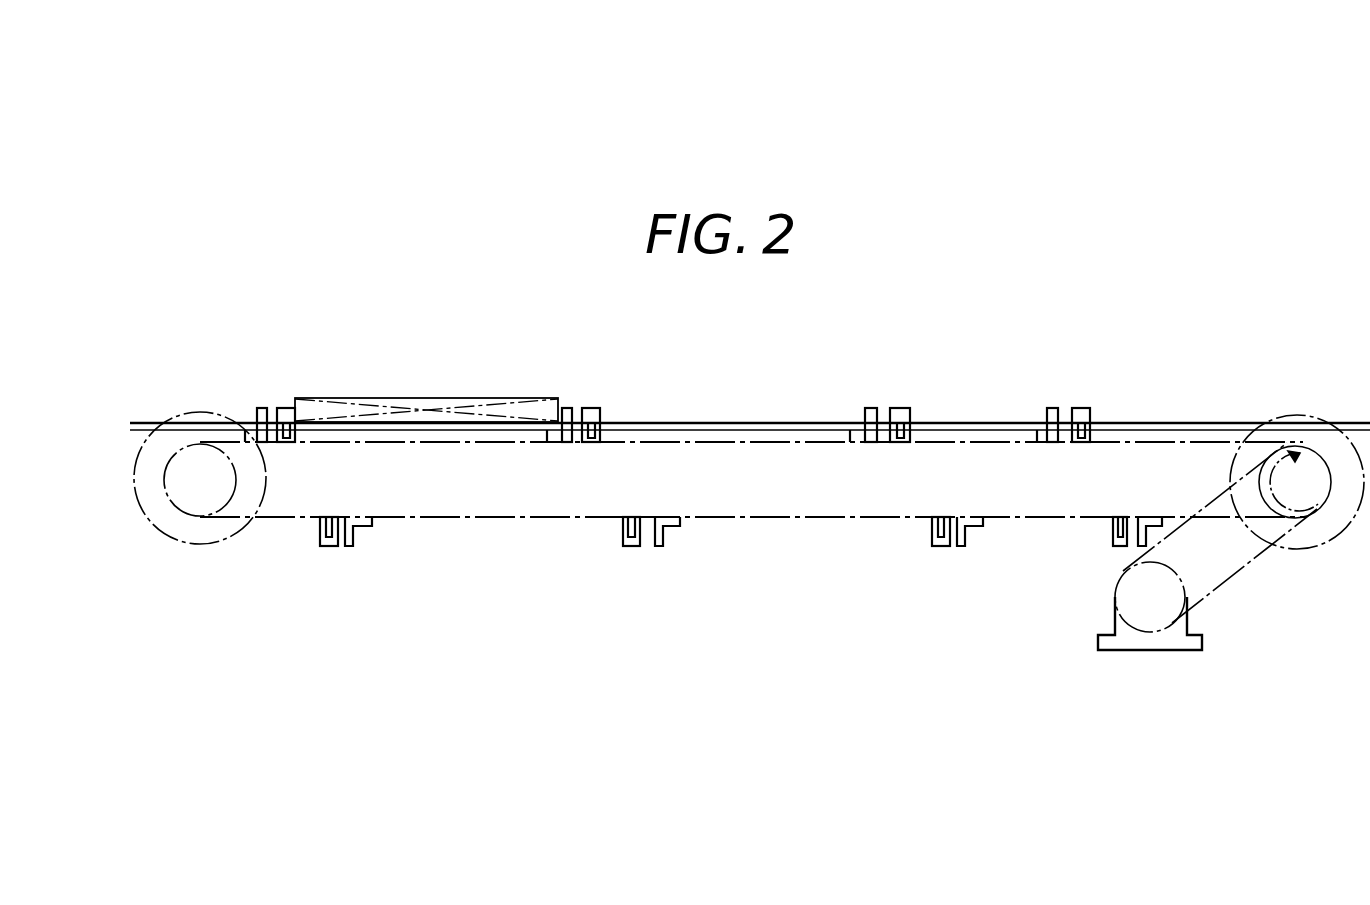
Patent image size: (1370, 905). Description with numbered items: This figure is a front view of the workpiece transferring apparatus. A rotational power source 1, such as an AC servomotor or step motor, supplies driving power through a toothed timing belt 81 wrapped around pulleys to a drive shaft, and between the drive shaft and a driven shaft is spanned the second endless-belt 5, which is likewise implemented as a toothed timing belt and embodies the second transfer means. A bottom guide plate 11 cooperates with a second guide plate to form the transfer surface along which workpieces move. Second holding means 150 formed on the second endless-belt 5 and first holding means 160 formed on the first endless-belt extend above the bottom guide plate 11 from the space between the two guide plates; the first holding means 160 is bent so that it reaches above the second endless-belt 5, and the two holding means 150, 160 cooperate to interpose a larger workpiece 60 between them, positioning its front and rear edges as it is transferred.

The rotational power source 1 is at (1130, 637).
The second endless-belt 5 is at (775, 519).
The bottom guide plate 11 is at (742, 422).
The workpiece 60 is at (443, 399).
The timing belt 81 is at (1250, 567).
The second holding means 150 is at (287, 408).
The first holding means 160 is at (262, 408).